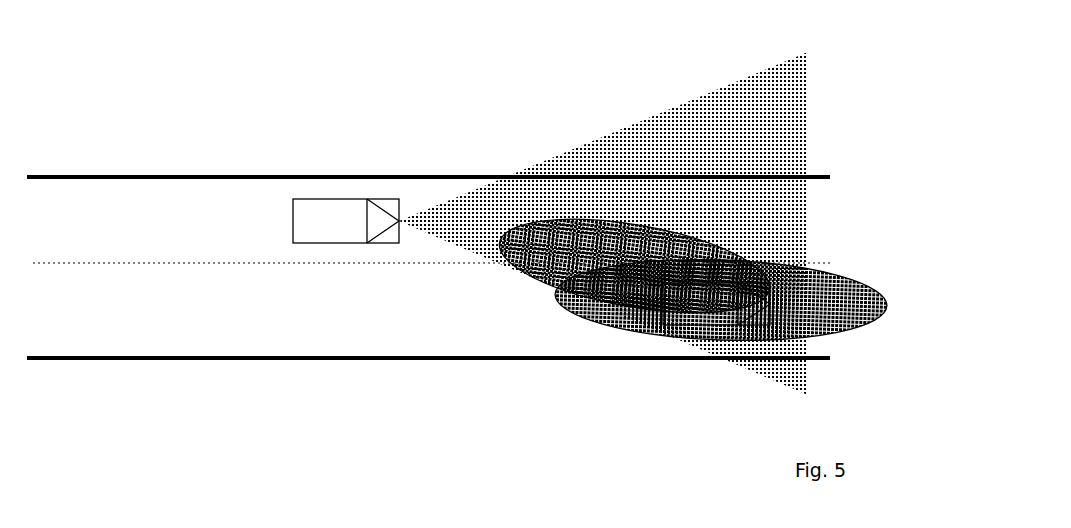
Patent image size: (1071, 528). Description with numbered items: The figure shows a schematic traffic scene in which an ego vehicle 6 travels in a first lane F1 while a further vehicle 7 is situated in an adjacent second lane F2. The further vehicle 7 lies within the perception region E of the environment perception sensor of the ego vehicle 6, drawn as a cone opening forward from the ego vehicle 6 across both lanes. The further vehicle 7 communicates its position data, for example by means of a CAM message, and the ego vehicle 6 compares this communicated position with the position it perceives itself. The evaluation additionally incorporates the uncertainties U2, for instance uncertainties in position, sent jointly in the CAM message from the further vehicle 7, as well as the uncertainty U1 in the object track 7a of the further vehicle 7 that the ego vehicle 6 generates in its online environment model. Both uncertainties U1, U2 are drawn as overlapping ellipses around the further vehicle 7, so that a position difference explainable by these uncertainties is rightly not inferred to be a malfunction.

The ego vehicle 6 is at (326, 196).
The further vehicle 7 is at (680, 318).
The object track 7a is at (560, 282).
The perception region E is at (602, 157).
The uncertainty U1 is at (545, 223).
The uncertainties U2 is at (778, 278).
The first lane F1 is at (423, 220).
The second lane F2 is at (423, 330).